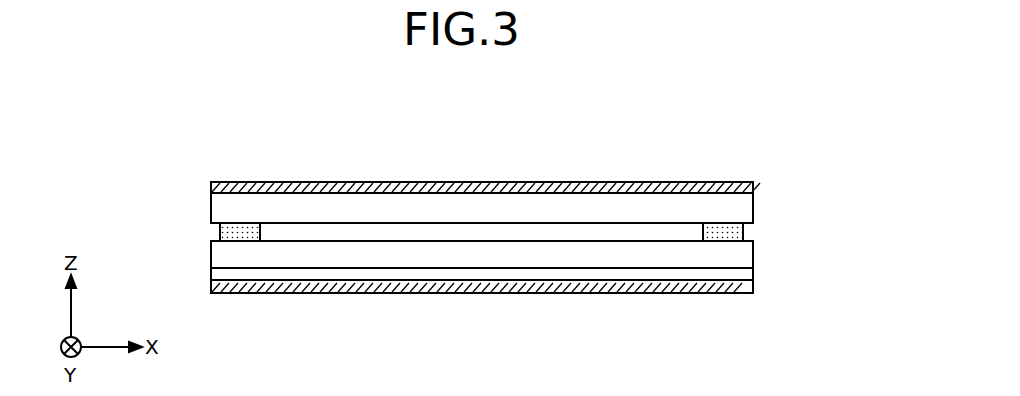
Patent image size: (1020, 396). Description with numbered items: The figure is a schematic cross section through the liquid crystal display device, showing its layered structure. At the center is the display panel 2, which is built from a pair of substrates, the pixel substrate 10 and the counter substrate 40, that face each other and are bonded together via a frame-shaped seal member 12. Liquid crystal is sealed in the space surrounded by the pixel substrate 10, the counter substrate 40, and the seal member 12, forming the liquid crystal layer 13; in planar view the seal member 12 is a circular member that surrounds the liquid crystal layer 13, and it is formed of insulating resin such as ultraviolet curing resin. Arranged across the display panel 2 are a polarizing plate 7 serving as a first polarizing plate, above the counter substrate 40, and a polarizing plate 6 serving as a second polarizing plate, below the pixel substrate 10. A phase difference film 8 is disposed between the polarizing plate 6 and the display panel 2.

The display panel 2 is at (838, 200).
The polarizing plate 7 is at (755, 185).
The counter substrate 40 is at (747, 208).
The seal member 12 is at (235, 228).
The liquid crystal layer 13 is at (478, 231).
The pixel substrate 10 is at (747, 257).
The phase difference film 8 is at (748, 277).
The polarizing plate 6 is at (753, 289).